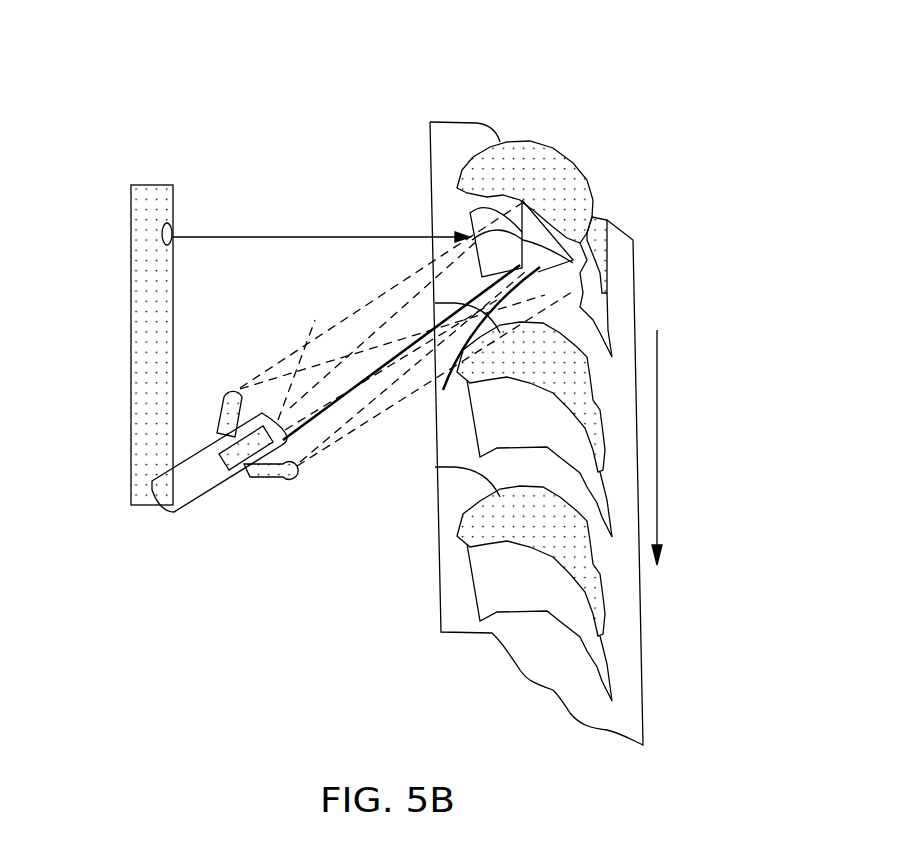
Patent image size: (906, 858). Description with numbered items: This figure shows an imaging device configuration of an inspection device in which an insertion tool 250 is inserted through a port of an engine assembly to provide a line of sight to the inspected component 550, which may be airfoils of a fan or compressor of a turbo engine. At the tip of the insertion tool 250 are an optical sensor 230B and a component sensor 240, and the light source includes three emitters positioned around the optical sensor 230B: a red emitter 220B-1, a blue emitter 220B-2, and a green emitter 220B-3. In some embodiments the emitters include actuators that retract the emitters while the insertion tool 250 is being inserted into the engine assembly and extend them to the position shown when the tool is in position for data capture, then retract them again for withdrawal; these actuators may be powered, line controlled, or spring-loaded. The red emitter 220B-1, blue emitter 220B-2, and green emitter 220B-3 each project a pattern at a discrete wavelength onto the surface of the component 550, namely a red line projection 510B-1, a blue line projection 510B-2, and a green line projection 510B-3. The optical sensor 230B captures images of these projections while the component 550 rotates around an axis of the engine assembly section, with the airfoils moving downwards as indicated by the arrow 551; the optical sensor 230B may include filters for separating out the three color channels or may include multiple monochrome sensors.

The component sensor 240 is at (157, 235).
The insertion tool 250 is at (130, 350).
The red emitter 220B-1 is at (232, 382).
The blue emitter 220B-2 is at (223, 457).
The green emitter 220B-3 is at (287, 480).
The optical sensor 230B is at (275, 430).
The red line projection 510B-1 is at (522, 200).
The blue line projection 510B-2 is at (565, 250).
The green line projection 510B-3 is at (478, 205).
The inspected component 550 is at (593, 175).
The arrow 551 is at (707, 447).